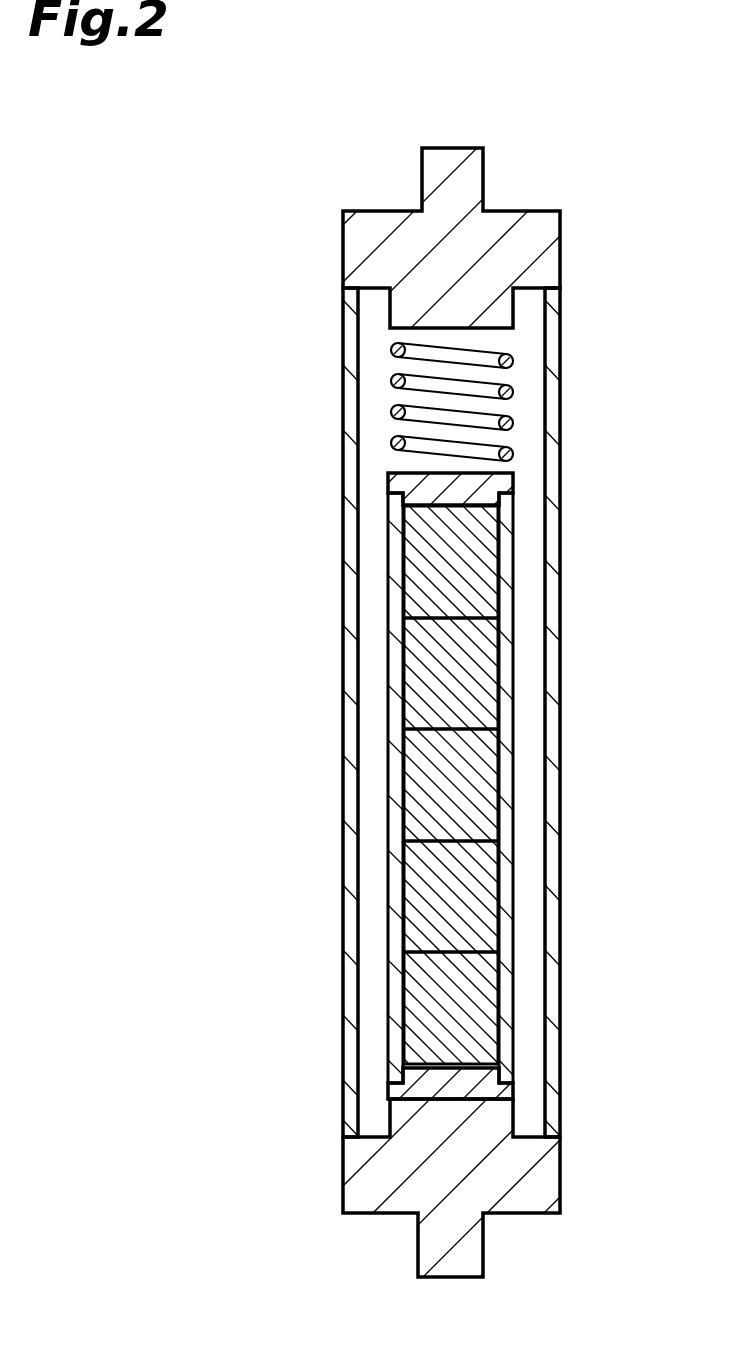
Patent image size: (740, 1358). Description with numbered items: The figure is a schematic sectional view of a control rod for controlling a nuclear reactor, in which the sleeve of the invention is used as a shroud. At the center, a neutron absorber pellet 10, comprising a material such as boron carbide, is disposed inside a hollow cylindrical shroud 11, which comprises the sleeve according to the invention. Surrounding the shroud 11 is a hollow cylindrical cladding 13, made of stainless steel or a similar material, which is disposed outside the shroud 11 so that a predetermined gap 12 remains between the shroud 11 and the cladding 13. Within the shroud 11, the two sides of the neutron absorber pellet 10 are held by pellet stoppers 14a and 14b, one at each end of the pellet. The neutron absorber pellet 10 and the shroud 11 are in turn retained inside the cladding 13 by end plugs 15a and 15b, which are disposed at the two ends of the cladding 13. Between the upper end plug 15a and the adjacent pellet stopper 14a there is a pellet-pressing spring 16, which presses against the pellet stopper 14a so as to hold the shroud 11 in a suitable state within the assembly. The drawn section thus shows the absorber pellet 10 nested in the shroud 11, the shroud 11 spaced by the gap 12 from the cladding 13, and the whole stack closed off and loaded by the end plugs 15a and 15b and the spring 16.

The neutron absorber pellet 10 is at (425, 893).
The shroud 11 is at (395, 603).
The gap 12 is at (527, 615).
The cladding 13 is at (350, 437).
The pellet stopper 14a is at (513, 475).
The pellet stopper 14b is at (485, 1092).
The end plug 15a is at (545, 236).
The end plug 15b is at (467, 1250).
The pellet-pressing spring 16 is at (513, 362).